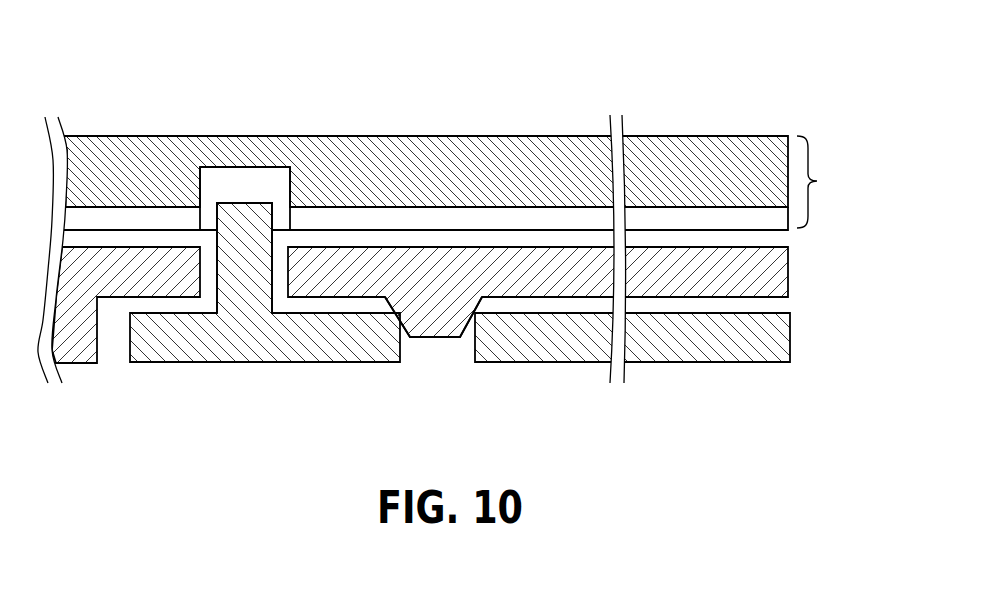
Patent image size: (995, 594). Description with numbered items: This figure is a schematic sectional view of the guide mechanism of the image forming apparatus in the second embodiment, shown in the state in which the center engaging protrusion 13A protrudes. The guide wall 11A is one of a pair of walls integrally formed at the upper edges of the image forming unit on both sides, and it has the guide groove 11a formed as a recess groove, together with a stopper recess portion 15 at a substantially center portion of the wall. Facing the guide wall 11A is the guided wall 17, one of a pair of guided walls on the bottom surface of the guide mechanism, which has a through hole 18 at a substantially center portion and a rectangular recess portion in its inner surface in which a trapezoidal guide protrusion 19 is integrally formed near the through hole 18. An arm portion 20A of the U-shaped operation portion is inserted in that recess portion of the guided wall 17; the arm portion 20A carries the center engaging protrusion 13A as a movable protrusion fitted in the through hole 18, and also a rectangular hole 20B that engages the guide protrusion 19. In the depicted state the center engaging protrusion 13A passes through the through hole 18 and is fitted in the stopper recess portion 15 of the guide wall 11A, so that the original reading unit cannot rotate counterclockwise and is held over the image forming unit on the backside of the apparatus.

The guide wall 11A is at (467, 182).
The guide groove 11a is at (687, 217).
The center engaging protrusion 13A is at (261, 190).
The stopper recess portion 15 is at (207, 165).
The guided wall 17 is at (732, 277).
The through hole 18 is at (206, 290).
The guide protrusion 19 is at (432, 338).
The arm portion 20A is at (782, 348).
The rectangular hole 20B is at (402, 346).